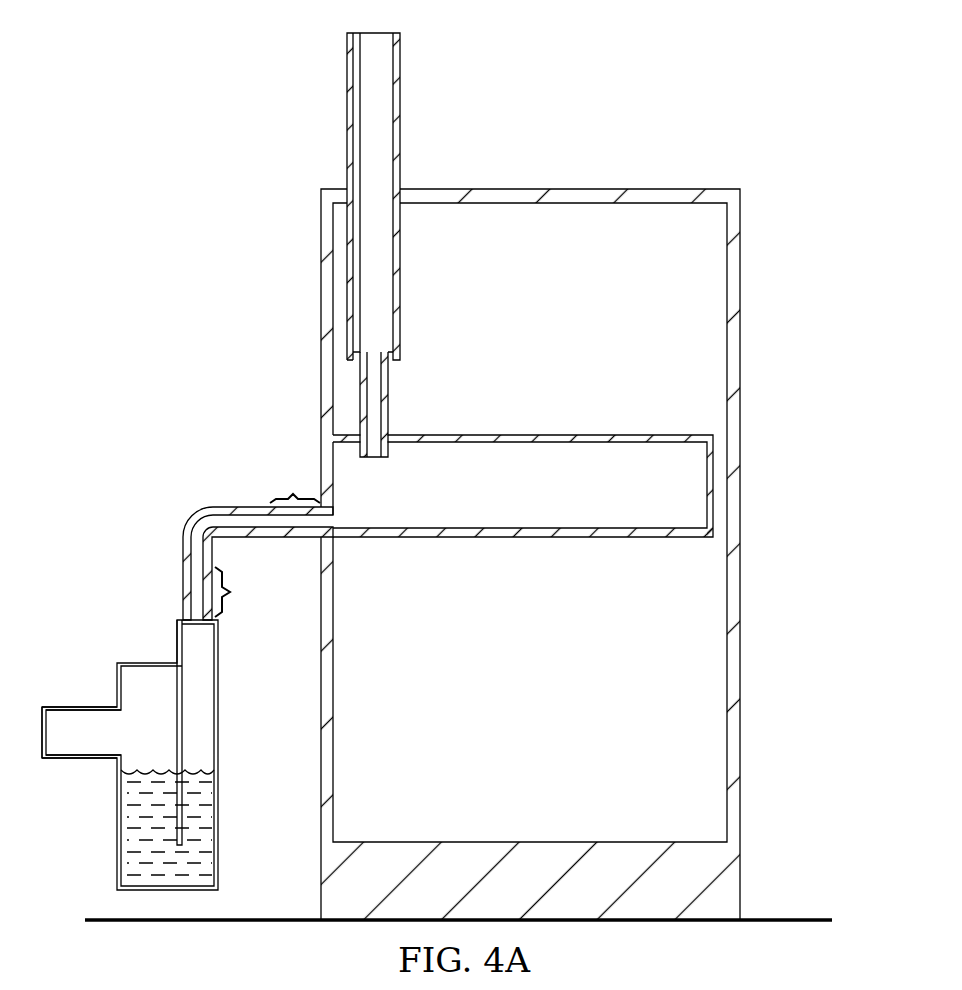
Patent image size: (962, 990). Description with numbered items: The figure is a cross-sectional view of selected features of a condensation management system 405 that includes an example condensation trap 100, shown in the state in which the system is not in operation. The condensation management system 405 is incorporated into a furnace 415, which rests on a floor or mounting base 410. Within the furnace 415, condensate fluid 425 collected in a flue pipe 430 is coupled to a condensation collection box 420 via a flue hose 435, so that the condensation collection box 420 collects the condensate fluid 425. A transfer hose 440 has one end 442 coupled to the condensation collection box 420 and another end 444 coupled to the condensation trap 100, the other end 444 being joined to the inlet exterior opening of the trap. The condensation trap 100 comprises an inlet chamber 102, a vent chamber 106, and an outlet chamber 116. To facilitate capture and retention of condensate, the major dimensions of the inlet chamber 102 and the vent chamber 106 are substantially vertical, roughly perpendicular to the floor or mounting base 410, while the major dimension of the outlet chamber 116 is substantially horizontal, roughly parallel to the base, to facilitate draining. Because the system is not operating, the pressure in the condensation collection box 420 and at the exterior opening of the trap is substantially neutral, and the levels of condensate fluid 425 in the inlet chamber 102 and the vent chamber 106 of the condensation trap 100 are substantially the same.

The condensation trap 100 is at (168, 154).
The inlet chamber 102 is at (172, 632).
The vent chamber 106 is at (110, 851).
The outlet chamber 116 is at (77, 703).
The condensation management system 405 is at (560, 365).
The floor or mounting base 410 is at (778, 918).
The furnace 415 is at (741, 700).
The condensation collection box 420 is at (641, 435).
The condensate fluid 425 is at (208, 858).
The flue pipe 430 is at (400, 88).
The flue hose 435 is at (388, 410).
The transfer hose 440 is at (222, 507).
The one end of transfer hose 442 is at (295, 483).
The other end of transfer hose 444 is at (245, 592).